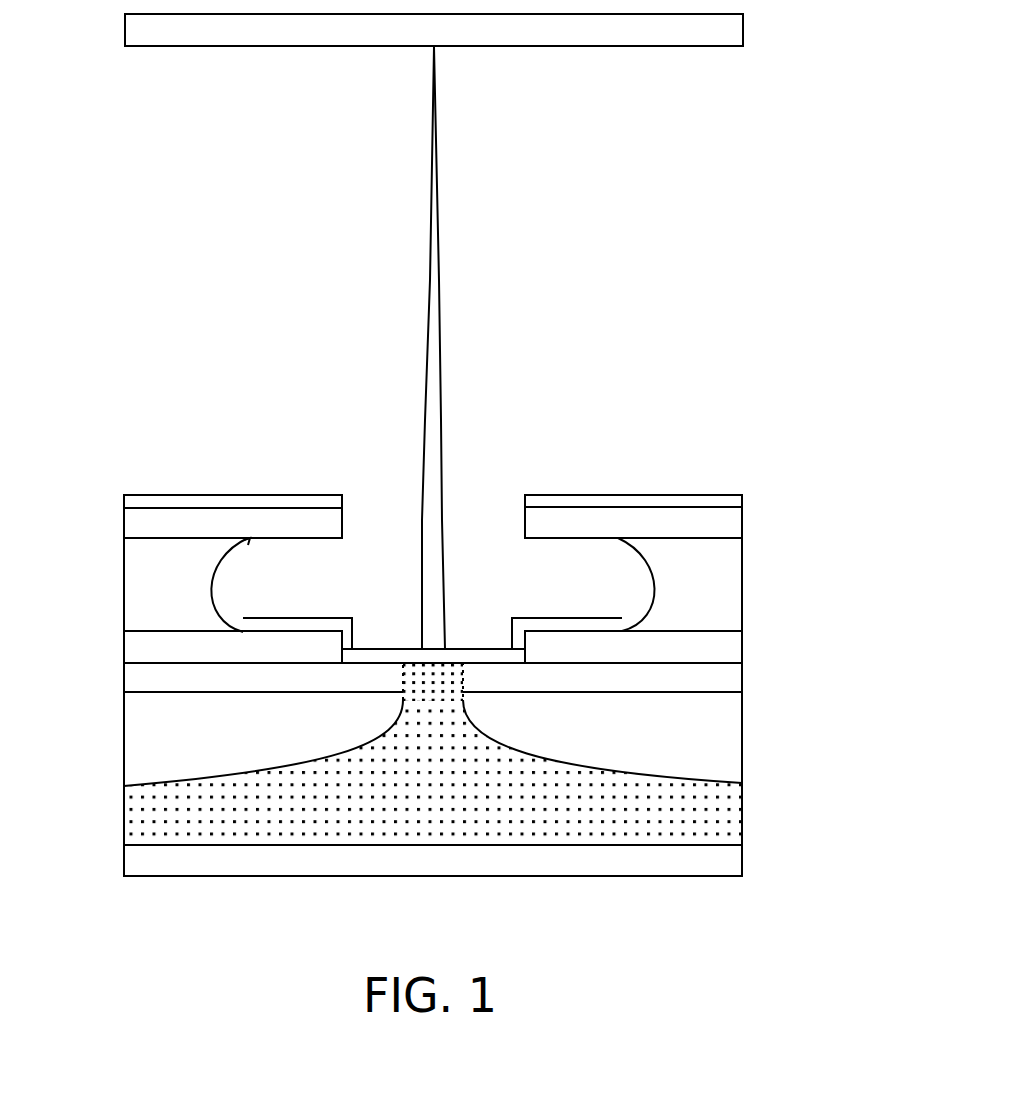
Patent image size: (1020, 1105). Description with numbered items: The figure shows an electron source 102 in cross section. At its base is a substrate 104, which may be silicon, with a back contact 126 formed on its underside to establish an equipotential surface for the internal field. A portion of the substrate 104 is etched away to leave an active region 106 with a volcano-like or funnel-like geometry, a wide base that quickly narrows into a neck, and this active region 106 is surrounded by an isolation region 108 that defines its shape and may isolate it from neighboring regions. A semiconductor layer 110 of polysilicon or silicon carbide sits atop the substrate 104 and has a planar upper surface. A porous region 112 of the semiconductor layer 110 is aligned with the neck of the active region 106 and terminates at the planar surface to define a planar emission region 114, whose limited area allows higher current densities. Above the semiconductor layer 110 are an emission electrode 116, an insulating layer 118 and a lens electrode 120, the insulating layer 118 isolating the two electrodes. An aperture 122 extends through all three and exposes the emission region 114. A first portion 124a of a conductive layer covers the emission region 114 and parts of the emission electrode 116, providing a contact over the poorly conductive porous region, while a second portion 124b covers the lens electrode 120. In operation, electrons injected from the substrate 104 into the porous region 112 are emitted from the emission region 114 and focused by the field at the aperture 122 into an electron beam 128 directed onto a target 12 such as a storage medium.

The target 12 is at (744, 18).
The electron source 102 is at (128, 383).
The substrate 104 is at (143, 822).
The active region 106 is at (438, 736).
The isolation region 108 is at (710, 736).
The semiconductor layer 110 is at (742, 675).
The porous region 112 is at (447, 680).
The emission region 114 is at (408, 665).
The emission electrode 116 is at (742, 641).
The insulating layer 118 is at (742, 574).
The lens electrode 120 is at (742, 518).
The aperture 122 is at (366, 492).
The first portion of the conductive layer 124a is at (534, 618).
The second portion of the conductive layer 124b is at (637, 495).
The back contact 126 is at (710, 875).
The electron beam 128 is at (439, 303).